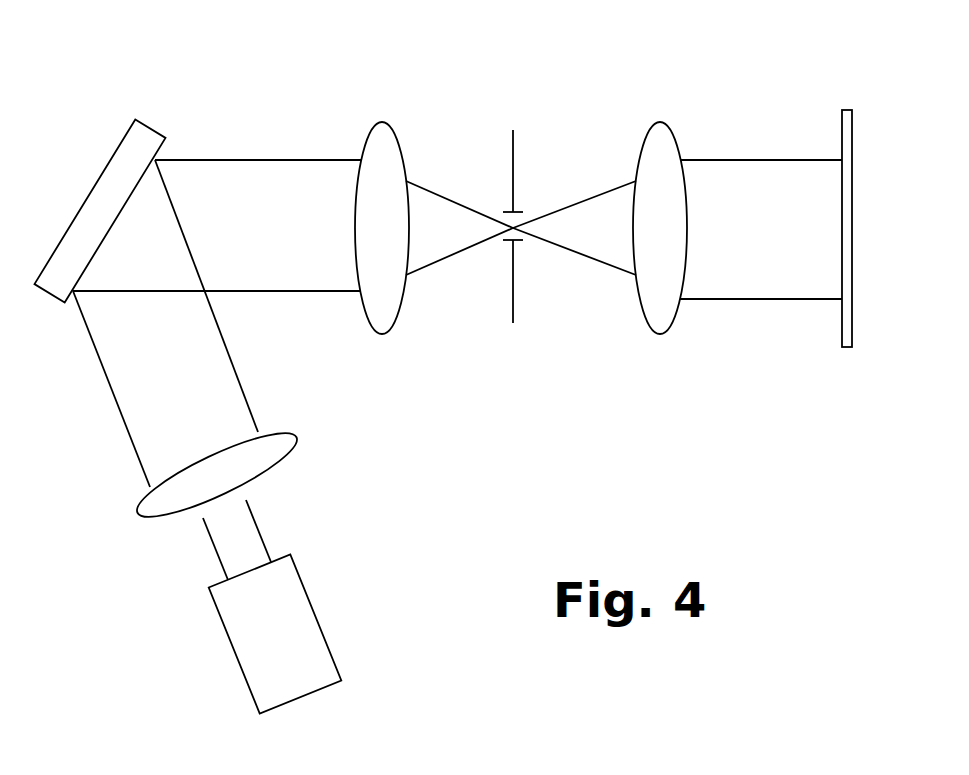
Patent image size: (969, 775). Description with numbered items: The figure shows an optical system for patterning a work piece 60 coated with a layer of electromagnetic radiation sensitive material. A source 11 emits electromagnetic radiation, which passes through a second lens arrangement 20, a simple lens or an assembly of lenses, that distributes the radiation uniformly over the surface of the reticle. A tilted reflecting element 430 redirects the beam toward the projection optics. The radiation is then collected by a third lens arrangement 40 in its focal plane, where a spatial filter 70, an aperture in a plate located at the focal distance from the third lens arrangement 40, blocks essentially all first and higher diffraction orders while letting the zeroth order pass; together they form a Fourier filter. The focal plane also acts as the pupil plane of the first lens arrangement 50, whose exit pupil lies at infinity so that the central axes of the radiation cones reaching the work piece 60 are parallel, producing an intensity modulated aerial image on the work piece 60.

The source 11 is at (295, 642).
The second lens arrangement 20 is at (255, 462).
The mirror 430 is at (127, 163).
The third lens arrangement 40 is at (378, 157).
The spatial filter 70 is at (515, 157).
The first lens arrangement 50 is at (663, 155).
The work piece 60 is at (843, 250).